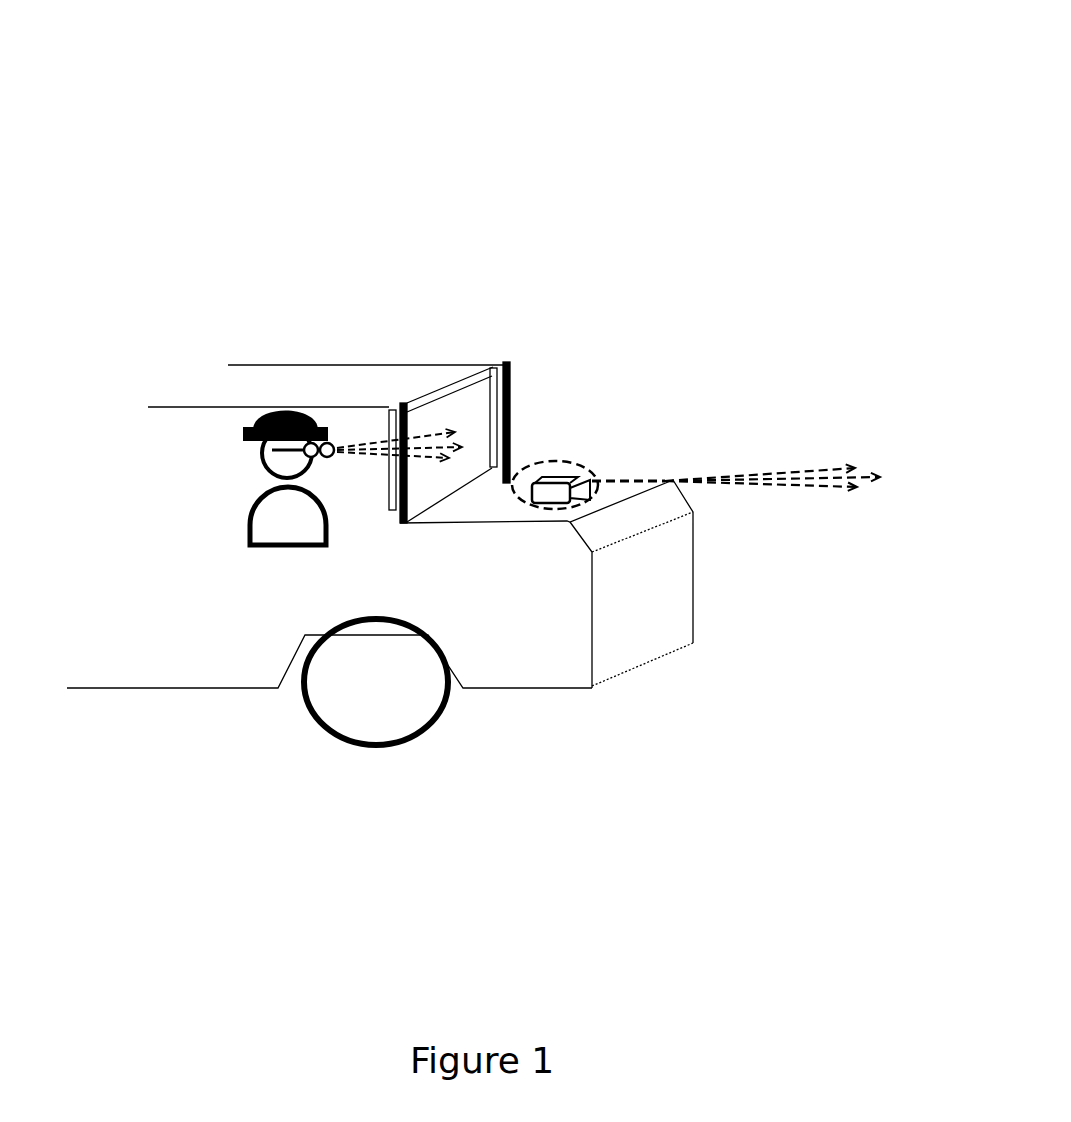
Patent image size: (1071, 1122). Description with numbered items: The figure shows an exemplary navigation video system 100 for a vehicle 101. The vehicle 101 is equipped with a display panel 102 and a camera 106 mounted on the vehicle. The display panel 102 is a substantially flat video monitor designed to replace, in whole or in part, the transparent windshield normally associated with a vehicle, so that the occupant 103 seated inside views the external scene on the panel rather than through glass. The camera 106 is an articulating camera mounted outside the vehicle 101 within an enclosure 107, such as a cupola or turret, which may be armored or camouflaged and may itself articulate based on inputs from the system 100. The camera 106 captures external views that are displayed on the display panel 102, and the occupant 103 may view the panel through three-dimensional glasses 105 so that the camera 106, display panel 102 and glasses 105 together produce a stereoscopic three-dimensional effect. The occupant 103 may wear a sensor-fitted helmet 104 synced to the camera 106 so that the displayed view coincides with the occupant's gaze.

The video system 100 is at (880, 92).
The vehicle 101 is at (243, 645).
The display panel 102 is at (455, 380).
The occupant 103 is at (265, 477).
The head-mounted device 104 is at (285, 403).
The glasses 105 is at (333, 467).
The camera 106 is at (558, 463).
The enclosure 107 is at (592, 465).